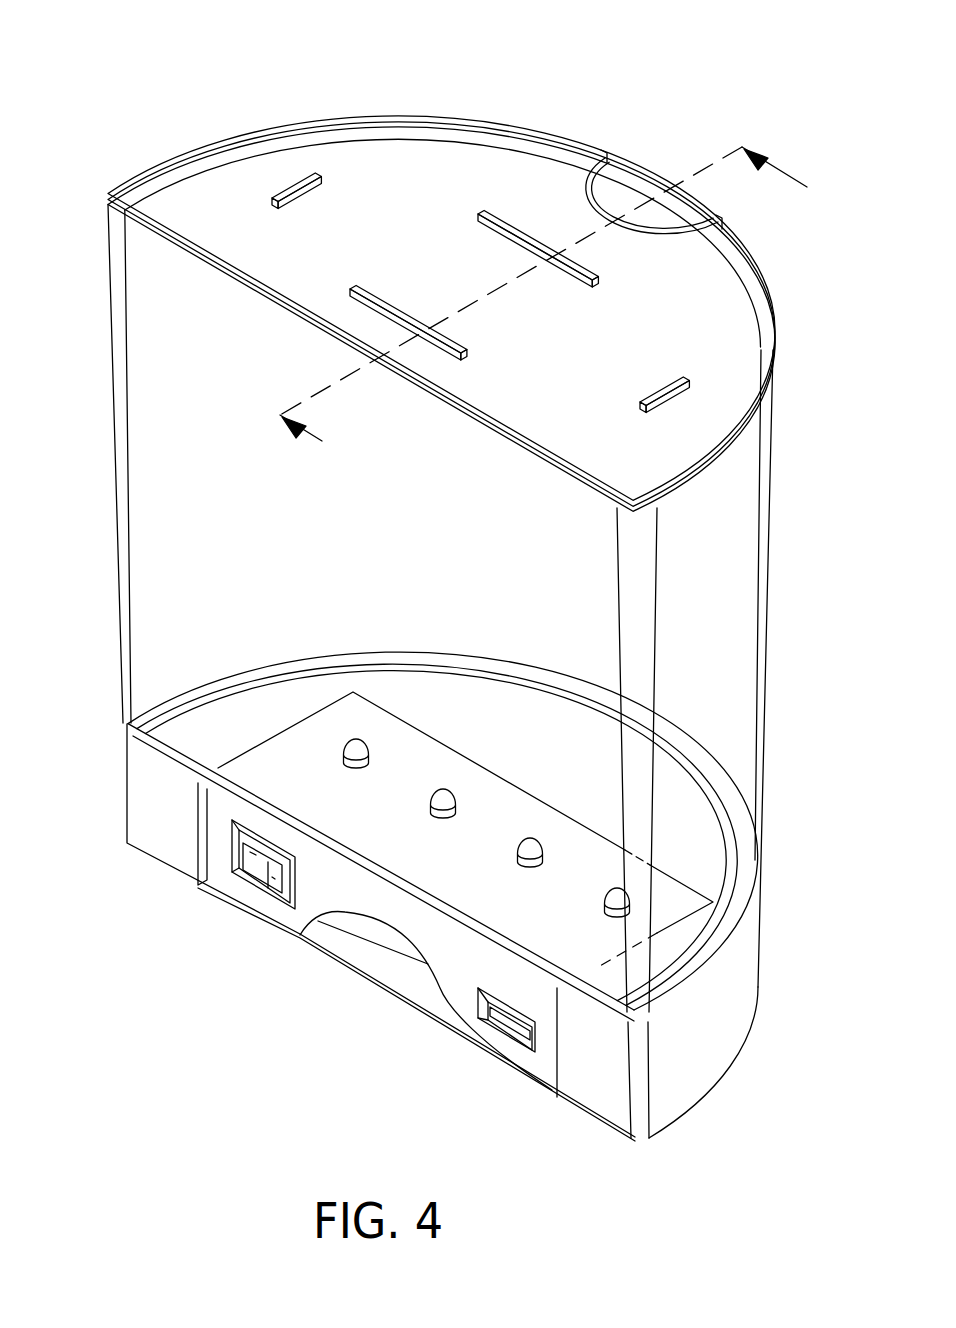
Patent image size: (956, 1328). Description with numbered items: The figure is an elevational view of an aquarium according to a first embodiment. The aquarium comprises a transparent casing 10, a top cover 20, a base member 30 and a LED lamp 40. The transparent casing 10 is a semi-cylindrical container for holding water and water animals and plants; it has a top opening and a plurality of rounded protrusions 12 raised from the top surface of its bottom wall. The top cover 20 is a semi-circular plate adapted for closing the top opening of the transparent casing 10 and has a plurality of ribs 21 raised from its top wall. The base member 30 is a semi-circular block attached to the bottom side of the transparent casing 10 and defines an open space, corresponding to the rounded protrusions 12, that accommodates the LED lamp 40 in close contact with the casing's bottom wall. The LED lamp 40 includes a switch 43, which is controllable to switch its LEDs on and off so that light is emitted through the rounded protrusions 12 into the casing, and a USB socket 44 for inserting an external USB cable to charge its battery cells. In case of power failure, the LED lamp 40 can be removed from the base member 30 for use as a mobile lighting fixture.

The transparent casing 10 is at (116, 512).
The rounded protrusions 12 is at (617, 890).
The top cover 20 is at (567, 137).
The ribs 21 is at (640, 400).
The base member 30 is at (692, 1057).
The LED lamp 40 is at (346, 1033).
The switch 43 is at (258, 867).
The USB socket 44 is at (512, 1017).